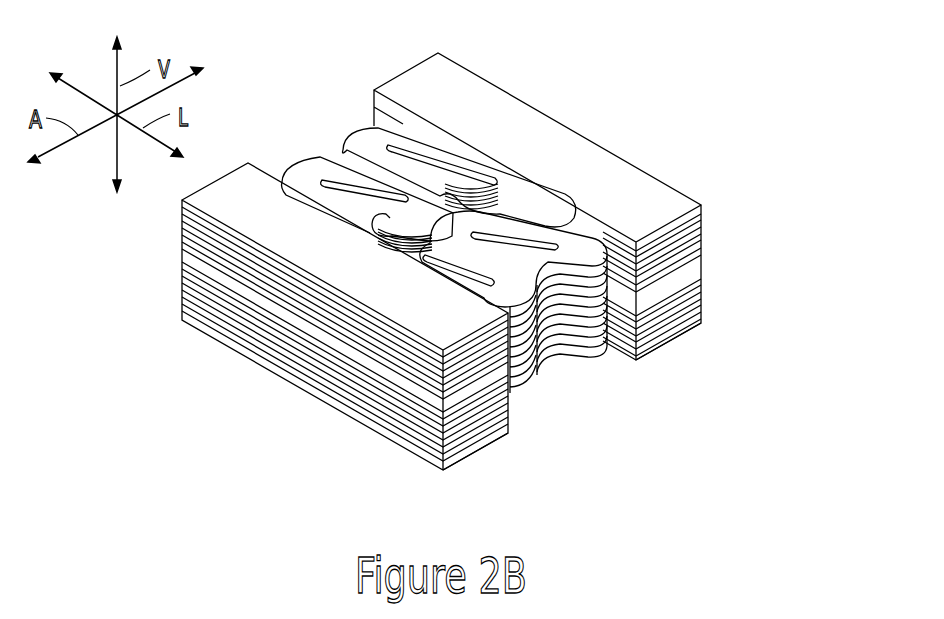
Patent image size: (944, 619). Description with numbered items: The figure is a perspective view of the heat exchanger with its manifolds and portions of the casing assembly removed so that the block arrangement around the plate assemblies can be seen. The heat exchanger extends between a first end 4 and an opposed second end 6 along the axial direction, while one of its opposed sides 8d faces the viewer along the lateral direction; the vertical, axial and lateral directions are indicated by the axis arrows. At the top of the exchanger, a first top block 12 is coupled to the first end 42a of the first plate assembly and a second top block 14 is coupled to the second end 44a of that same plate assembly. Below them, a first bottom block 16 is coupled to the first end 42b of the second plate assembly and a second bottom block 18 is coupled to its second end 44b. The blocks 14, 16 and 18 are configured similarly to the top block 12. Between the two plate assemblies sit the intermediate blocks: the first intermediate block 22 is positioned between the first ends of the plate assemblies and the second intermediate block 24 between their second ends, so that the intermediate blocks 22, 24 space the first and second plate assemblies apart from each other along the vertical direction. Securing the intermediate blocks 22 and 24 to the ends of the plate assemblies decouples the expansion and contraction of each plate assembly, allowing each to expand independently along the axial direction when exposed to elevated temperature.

The first end 4 is at (262, 417).
The second end 6 is at (600, 98).
The first top block 12 is at (242, 186).
The second top block 14 is at (505, 105).
The first bottom block 16 is at (460, 456).
The second bottom block 18 is at (665, 343).
The first intermediate block 22 is at (258, 302).
The second intermediate block 24 is at (693, 268).
The first end of the first plate assembly 42a is at (165, 232).
The first end of the second plate assembly 42b is at (165, 286).
The second end of the first plate assembly 44a is at (705, 232).
The second end of the second plate assembly 44b is at (705, 298).
The side 8d is at (597, 393).